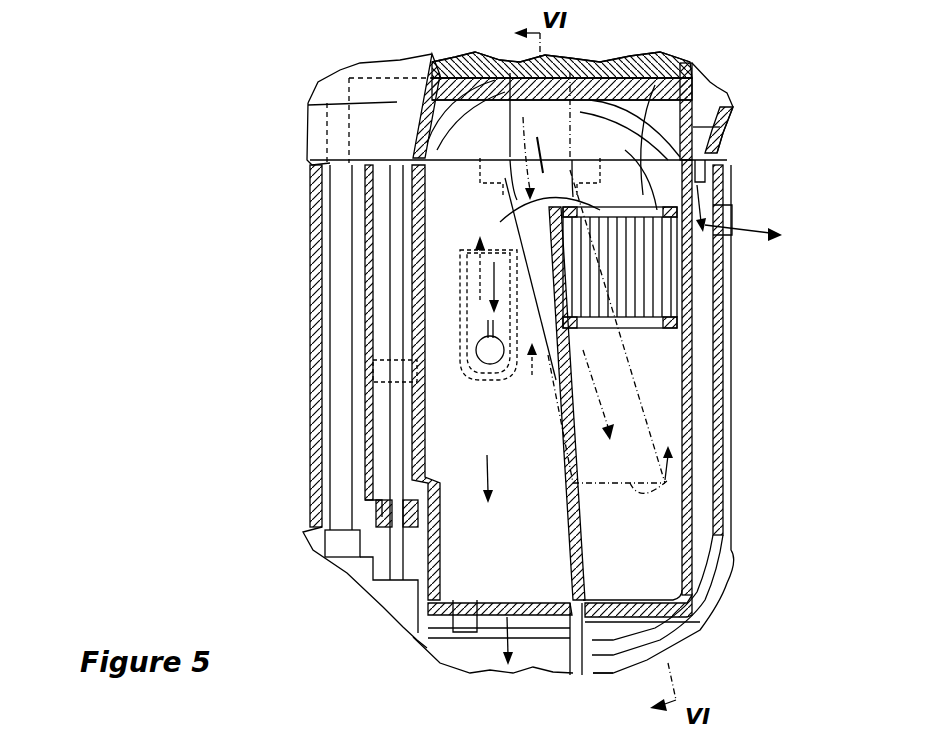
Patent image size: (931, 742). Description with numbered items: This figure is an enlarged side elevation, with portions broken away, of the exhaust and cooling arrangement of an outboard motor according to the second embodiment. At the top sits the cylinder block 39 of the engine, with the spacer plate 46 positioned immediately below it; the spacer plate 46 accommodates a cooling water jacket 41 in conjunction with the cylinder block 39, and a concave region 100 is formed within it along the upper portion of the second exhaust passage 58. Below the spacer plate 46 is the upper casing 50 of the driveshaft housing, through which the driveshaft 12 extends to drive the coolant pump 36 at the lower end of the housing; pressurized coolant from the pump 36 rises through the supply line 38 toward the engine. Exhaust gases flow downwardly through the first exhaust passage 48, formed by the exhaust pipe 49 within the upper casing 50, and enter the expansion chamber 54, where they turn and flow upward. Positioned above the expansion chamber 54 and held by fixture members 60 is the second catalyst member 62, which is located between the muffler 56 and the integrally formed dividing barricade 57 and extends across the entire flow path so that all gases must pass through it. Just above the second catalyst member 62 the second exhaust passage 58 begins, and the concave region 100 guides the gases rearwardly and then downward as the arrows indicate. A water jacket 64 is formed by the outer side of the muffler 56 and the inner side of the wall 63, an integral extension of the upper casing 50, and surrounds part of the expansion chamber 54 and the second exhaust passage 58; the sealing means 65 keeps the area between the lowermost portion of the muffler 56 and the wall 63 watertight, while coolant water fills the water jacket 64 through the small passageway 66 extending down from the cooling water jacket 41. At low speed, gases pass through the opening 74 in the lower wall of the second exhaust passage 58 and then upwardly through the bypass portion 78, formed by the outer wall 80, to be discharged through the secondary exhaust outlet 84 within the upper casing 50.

The driveshaft 12 is at (340, 372).
The coolant pump 36 is at (358, 573).
The supply line 38 is at (393, 238).
The cylinder block 39 is at (493, 70).
The cooling water jacket 41 is at (432, 70).
The spacer plate 46 is at (705, 145).
The first exhaust passage 48 is at (520, 362).
The exhaust pipe 49 is at (537, 400).
The upper casing 50 is at (715, 335).
The expansion chamber 54 is at (663, 572).
The muffler 56 is at (693, 278).
The dividing barricade 57 is at (577, 522).
The second exhaust passage 58 is at (495, 583).
The fixture members 60 is at (694, 70).
The second catalyst member 62 is at (640, 212).
The wall 63 is at (707, 495).
The water jacket 64 is at (693, 457).
The sealing means 65 is at (577, 620).
The small passageway 66 is at (717, 153).
The opening 74 is at (478, 367).
The bypass portion 78 is at (463, 283).
The outer wall 80 is at (460, 313).
The secondary exhaust outlet 84 is at (730, 228).
The concave region 100 is at (458, 120).